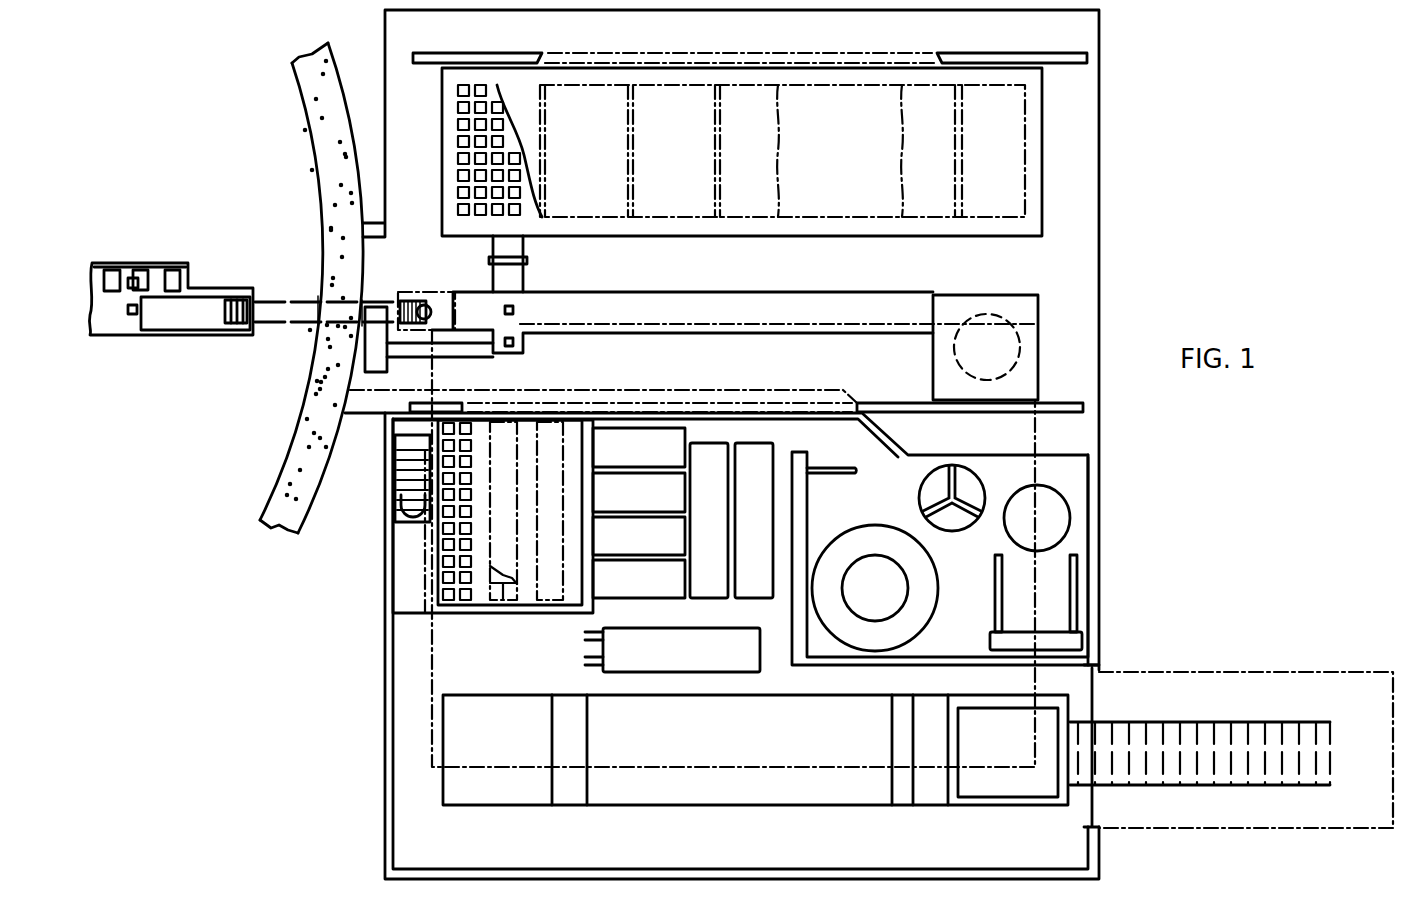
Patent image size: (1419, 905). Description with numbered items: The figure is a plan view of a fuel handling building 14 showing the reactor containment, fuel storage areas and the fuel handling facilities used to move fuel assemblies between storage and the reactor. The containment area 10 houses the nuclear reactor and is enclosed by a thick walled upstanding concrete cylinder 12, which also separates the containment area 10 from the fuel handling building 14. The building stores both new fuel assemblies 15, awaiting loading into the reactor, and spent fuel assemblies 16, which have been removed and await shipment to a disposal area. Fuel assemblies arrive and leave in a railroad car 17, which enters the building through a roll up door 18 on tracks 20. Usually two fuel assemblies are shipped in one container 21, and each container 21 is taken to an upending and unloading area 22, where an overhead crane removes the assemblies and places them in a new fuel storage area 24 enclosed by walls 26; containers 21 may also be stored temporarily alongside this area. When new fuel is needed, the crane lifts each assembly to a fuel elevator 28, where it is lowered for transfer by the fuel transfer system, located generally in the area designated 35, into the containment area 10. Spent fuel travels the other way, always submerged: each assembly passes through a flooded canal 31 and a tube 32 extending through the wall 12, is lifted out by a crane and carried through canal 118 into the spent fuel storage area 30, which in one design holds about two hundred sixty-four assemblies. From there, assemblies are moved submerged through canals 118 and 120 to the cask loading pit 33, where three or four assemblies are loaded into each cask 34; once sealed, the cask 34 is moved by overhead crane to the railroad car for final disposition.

The containment area 10 is at (255, 201).
The concrete cylinder 12 is at (305, 103).
The fuel handling building 14 is at (1107, 150).
The new fuel assemblies 15 is at (447, 540).
The spent fuel assemblies 16 is at (463, 192).
The railroad car 17 is at (730, 738).
The roll up door 18 is at (1096, 686).
The tracks 20 is at (1212, 736).
The container 21 is at (719, 526).
The upending and unloading area 22 is at (615, 605).
The new fuel storage area 24 is at (487, 625).
The walls 26 is at (465, 612).
The fuel elevator 28 is at (513, 310).
The spent fuel storage area 30 is at (441, 134).
The flooded canal 31 is at (297, 300).
The tube 32 is at (362, 292).
The cask loading pit 33 is at (958, 295).
The cask 34 is at (950, 348).
The fuel transfer system area 35 is at (308, 333).
The canal 118 is at (518, 268).
The canal 120 is at (781, 298).